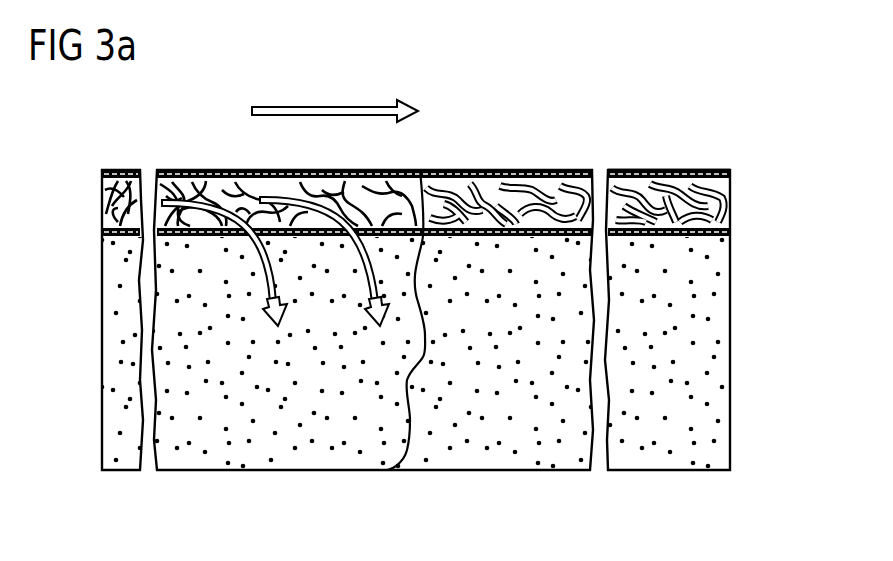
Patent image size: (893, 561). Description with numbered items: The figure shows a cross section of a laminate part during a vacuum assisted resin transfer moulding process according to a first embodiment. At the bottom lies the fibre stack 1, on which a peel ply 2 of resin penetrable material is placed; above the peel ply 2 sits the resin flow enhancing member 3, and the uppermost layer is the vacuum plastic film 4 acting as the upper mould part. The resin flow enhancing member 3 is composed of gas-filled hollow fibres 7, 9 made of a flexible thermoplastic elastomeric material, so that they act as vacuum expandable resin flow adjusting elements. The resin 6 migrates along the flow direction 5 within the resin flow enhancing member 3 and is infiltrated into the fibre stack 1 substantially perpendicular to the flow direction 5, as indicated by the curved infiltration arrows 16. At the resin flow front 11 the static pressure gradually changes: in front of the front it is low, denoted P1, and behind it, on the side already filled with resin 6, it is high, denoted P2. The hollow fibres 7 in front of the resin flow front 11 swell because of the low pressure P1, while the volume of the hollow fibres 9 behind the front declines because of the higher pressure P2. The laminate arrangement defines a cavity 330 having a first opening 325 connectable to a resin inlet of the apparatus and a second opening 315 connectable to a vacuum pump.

The fibre stack 1 is at (712, 375).
The peel ply 2 is at (703, 233).
The resin flow enhancing member 3 is at (718, 210).
The vacuum plastic film 4 is at (634, 170).
The flow direction 5 is at (322, 108).
The resin 6 is at (226, 216).
The hollow fibres 7 is at (180, 170).
The hollow fibres 9 is at (732, 174).
The resin flow front 11 is at (426, 331).
The flow path 16 is at (228, 239).
The second opening 315 is at (102, 222).
The first opening 325 is at (731, 233).
The cavity 330 is at (505, 170).
The low static pressure P1 is at (630, 452).
The high static pressure P2 is at (215, 453).